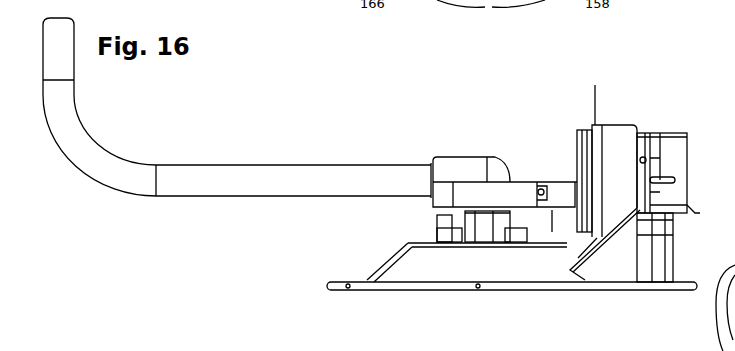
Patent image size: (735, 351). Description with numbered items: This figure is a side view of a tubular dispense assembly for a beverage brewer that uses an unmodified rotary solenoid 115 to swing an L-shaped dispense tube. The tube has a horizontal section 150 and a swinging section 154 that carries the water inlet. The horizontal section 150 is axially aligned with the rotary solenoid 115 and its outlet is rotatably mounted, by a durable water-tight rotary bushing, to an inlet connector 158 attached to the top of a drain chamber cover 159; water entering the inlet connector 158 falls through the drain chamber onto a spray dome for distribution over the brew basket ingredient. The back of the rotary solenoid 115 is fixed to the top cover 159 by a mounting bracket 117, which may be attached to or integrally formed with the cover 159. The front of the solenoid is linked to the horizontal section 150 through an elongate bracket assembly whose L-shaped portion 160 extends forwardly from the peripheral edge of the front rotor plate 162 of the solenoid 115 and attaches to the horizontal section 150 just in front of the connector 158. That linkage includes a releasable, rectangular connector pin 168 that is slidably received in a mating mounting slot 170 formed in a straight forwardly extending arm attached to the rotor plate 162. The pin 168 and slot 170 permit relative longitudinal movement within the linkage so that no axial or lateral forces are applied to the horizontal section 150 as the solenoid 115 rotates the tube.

The rotary solenoid 115 is at (615, 130).
The mounting bracket 117 is at (637, 260).
The horizontal section 150 is at (232, 168).
The swinging section 154 is at (75, 70).
The inlet connector 158 is at (455, 157).
The drain chamber cover 159 is at (380, 261).
The L-shaped portion 160 is at (437, 225).
The front rotor plate 162 is at (573, 145).
The connector pin 168 is at (555, 215).
The mounting slot 170 is at (538, 182).